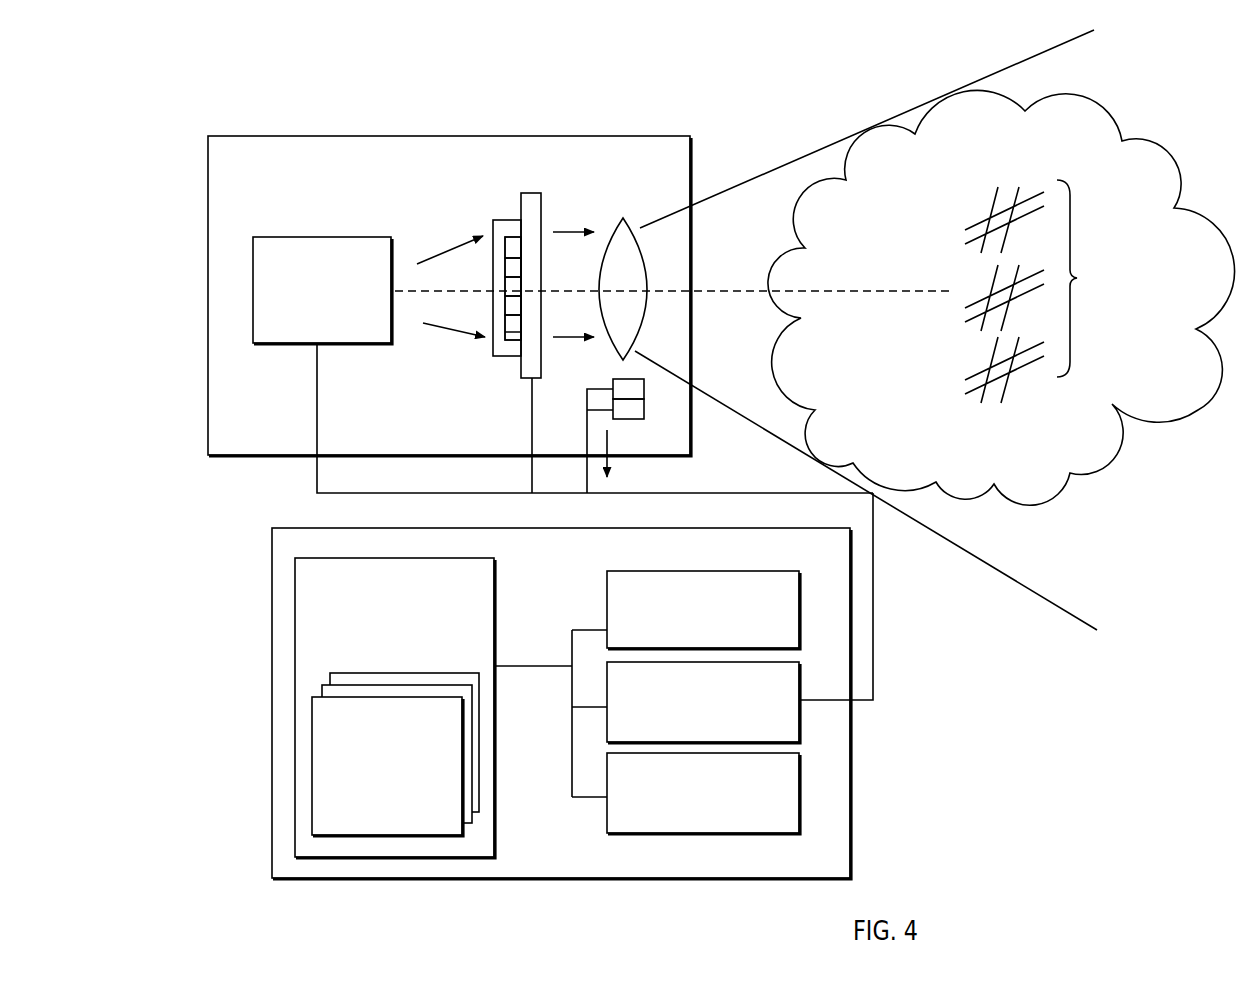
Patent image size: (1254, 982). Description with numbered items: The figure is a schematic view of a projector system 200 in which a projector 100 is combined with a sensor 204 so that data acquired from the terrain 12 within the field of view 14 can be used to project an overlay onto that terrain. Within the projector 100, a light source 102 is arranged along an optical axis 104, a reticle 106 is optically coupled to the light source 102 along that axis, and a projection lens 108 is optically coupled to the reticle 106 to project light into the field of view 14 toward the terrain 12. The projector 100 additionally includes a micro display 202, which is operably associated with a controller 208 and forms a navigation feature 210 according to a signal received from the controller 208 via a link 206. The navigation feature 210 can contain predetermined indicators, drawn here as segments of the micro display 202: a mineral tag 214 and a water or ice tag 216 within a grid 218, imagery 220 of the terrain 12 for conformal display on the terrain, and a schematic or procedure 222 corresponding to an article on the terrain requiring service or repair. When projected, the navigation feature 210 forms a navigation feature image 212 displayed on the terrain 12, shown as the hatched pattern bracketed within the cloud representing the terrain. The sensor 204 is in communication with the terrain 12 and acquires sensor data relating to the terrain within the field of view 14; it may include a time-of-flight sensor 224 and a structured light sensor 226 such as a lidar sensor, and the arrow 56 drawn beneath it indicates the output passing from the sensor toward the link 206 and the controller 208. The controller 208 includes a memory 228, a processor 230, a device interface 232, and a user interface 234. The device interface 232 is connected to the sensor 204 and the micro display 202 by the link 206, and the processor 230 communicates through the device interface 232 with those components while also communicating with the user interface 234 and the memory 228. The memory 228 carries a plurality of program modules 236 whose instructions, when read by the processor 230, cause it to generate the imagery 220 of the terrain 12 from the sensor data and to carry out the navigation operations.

The projector 100 is at (568, 83).
The light source 102 is at (316, 237).
The optical axis 104 is at (417, 292).
The reticle 106 is at (541, 211).
The projection lens 108 is at (600, 310).
The field of view 14 is at (778, 167).
The terrain 12 is at (1038, 500).
The micro display 202 is at (499, 257).
The navigation feature 210 is at (508, 262).
The imagery 220 is at (513, 242).
The grid 218 is at (513, 268).
The water or ice tag 216 is at (513, 290).
The mineral tag 214 is at (513, 308).
The schematic or procedure 222 is at (506, 335).
The time-of-flight sensor 224 is at (635, 392).
The structured light sensor 226 is at (645, 412).
The reflected light 56 is at (612, 462).
The sensor 204 is at (633, 434).
The navigation feature image 212 is at (1038, 291).
The controller 208 is at (850, 852).
The link 206 is at (875, 665).
The memory 228 is at (433, 858).
The program modules 236 is at (355, 837).
The processor 230 is at (606, 582).
The device interface 232 is at (800, 730).
The user interface 234 is at (707, 835).
The projector system 200 is at (232, 843).